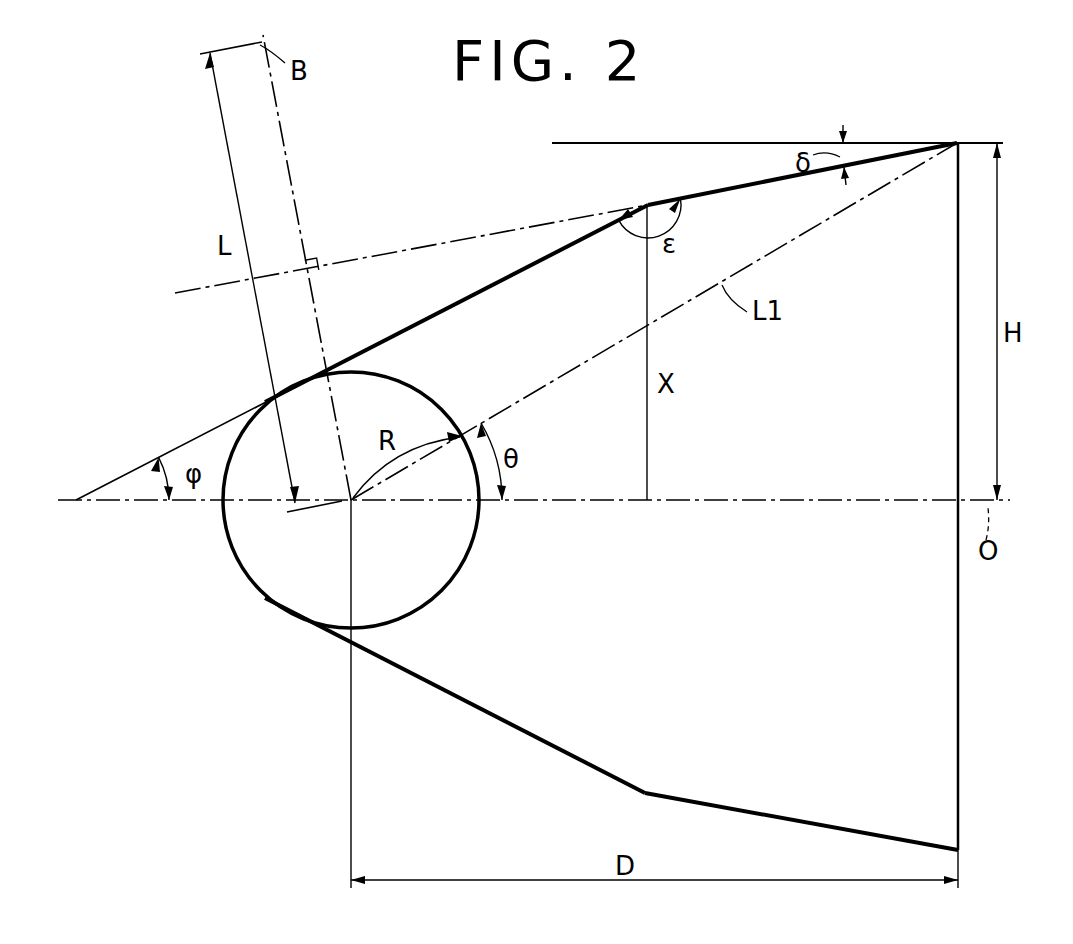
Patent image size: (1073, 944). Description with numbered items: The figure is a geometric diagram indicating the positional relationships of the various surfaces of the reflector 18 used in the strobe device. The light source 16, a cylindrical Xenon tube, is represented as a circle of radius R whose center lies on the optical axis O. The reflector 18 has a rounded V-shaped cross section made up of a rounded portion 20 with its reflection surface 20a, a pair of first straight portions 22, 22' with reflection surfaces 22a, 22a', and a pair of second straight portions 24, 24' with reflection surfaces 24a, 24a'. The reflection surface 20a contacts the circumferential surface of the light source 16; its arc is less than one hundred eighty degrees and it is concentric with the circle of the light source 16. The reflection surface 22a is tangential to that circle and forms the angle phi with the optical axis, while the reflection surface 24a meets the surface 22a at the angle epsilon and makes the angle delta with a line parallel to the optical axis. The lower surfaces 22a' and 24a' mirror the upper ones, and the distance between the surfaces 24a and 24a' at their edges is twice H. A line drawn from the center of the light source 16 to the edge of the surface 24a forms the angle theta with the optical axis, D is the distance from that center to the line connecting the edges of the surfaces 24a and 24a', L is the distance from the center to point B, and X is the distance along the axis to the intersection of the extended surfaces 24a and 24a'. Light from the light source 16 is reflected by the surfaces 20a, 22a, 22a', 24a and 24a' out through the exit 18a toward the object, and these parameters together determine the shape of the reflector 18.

The light source 16 is at (468, 557).
The reflector 18 is at (611, 255).
The exit of the reflector 18a is at (938, 435).
The rounded portion 20 is at (272, 602).
The reflection surface of the rounded portion 20a is at (228, 531).
The first straight portion 22 is at (456, 303).
The reflection surface of the first straight portion 22a is at (358, 333).
The second straight portion 24 is at (802, 156).
The reflection surface of the second straight portion 24a is at (767, 148).
The first straight portion 22' is at (455, 695).
The reflection surface of the first straight portion 22a' is at (492, 729).
The second straight portion 24' is at (801, 826).
The reflection surface of the second straight portion 24a' is at (842, 846).